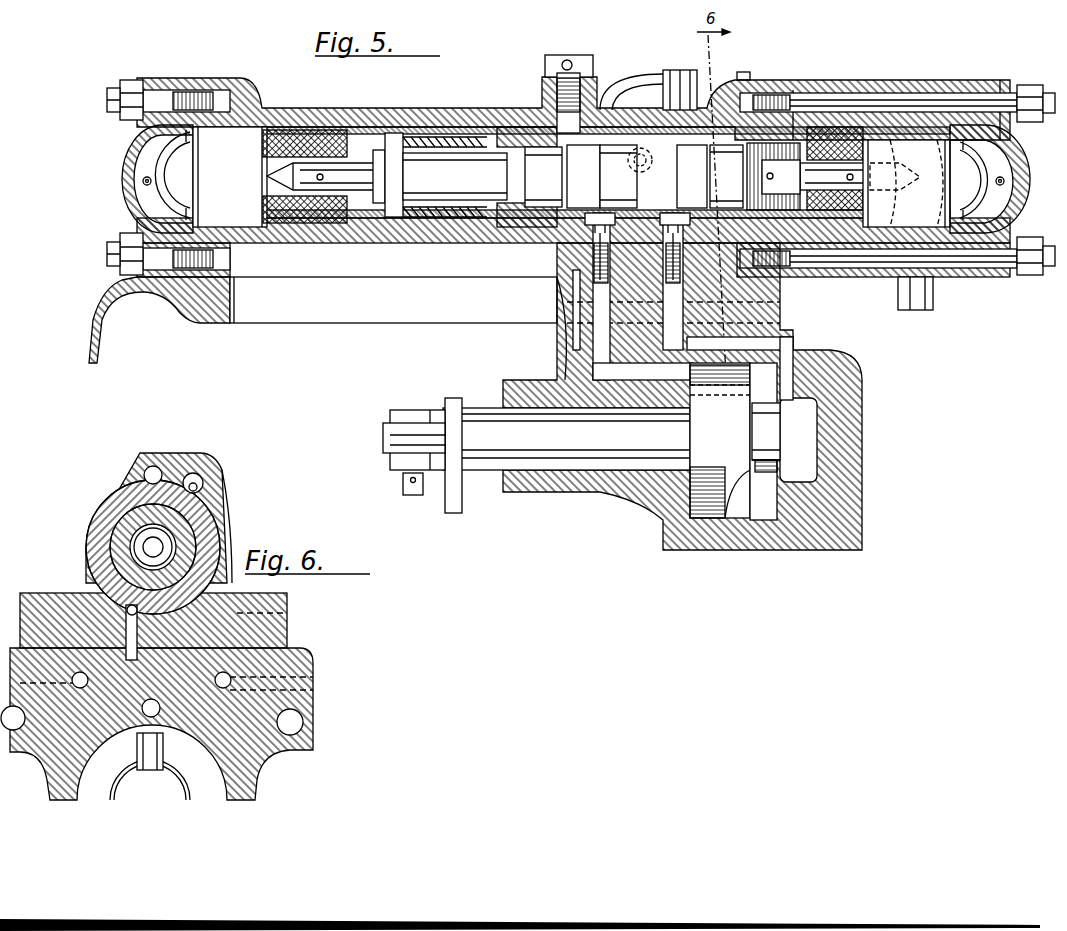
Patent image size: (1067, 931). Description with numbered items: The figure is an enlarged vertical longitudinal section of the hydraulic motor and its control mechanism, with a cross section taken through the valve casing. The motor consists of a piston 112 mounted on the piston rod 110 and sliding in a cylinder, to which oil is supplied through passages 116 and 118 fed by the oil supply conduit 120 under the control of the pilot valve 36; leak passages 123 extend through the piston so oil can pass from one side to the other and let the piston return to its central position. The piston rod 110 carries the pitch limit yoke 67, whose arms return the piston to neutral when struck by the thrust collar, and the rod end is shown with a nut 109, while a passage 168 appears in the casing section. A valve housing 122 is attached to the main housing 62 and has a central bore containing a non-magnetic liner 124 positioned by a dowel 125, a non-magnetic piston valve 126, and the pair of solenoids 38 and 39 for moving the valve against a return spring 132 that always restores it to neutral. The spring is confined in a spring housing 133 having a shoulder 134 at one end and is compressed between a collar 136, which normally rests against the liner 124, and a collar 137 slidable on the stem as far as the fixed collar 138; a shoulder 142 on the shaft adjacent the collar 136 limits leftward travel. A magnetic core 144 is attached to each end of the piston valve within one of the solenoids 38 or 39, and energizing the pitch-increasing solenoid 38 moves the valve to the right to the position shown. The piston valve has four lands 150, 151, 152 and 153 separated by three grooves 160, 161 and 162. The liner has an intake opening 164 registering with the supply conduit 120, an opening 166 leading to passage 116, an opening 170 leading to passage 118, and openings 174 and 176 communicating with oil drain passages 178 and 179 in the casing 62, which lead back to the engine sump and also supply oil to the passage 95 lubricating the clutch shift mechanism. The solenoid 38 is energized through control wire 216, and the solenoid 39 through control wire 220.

In FIG. 5, the pilot valve 36 is at (110, 183).
In FIG. 5, the pitch-increasing solenoid 38 is at (946, 179).
In FIG. 5, the pitch-decreasing solenoid 39 is at (230, 177).
In FIG. 5, the main housing 62 is at (112, 350).
In FIG. 5, the pitch limit yoke 67 is at (462, 508).
In FIG. 5, the passage 95 is at (808, 313).
In FIG. 6, the passage 95 is at (312, 662).
In FIG. 5, the nut 109 is at (388, 420).
In FIG. 5, the piston rod 110 is at (566, 439).
In FIG. 5, the piston 112 is at (720, 440).
In FIG. 5, the passage 116 is at (690, 378).
In FIG. 6, the passage 116 is at (145, 718).
In FIG. 5, the passage 118 is at (630, 392).
In FIG. 5, the oil supply conduit 120 is at (672, 73).
In FIG. 5, the valve housing 122 is at (257, 108).
In FIG. 5, the leak passages 123 is at (760, 485).
In FIG. 5, the non-magnetic liner 124 is at (506, 128).
In FIG. 6, the non-magnetic liner 124 is at (110, 523).
In FIG. 5, the dowel 125 is at (580, 60).
In FIG. 5, the non-magnetic piston valve 126 is at (455, 176).
In FIG. 5, the return spring 132 is at (415, 235).
In FIG. 5, the spring housing 133 is at (448, 128).
In FIG. 5, the shoulder 134 is at (377, 230).
In FIG. 5, the collar 136 is at (470, 232).
In FIG. 5, the collar 137 is at (400, 150).
In FIG. 5, the fixed collar 138 is at (380, 150).
In FIG. 5, the shoulder 142 is at (513, 215).
In FIG. 5, the magnetic core 144 is at (566, 175).
In FIG. 5, the land 150 is at (543, 177).
In FIG. 5, the land 151 is at (604, 170).
In FIG. 5, the land 152 is at (692, 176).
In FIG. 5, the land 153 is at (773, 176).
In FIG. 6, the land 153 is at (127, 541).
In FIG. 5, the groove 160 is at (583, 176).
In FIG. 5, the groove 161 is at (618, 176).
In FIG. 5, the groove 162 is at (726, 176).
In FIG. 6, the groove 162 is at (128, 550).
In FIG. 5, the intake opening 164 is at (640, 148).
In FIG. 5, the opening 166 is at (590, 270).
In FIG. 5, the passage 168 is at (790, 365).
In FIG. 6, the passage 168 is at (150, 768).
In FIG. 5, the opening 170 is at (620, 238).
In FIG. 5, the opening 174 is at (691, 188).
In FIG. 5, the opening 176 is at (600, 215).
In FIG. 5, the oil drain passage 178 is at (797, 287).
In FIG. 6, the oil drain passage 178 is at (80, 585).
In FIG. 5, the oil drain passage 179 is at (592, 262).
In FIG. 5, the control wire 216 is at (956, 277).
In FIG. 5, the control wire 220 is at (155, 160).